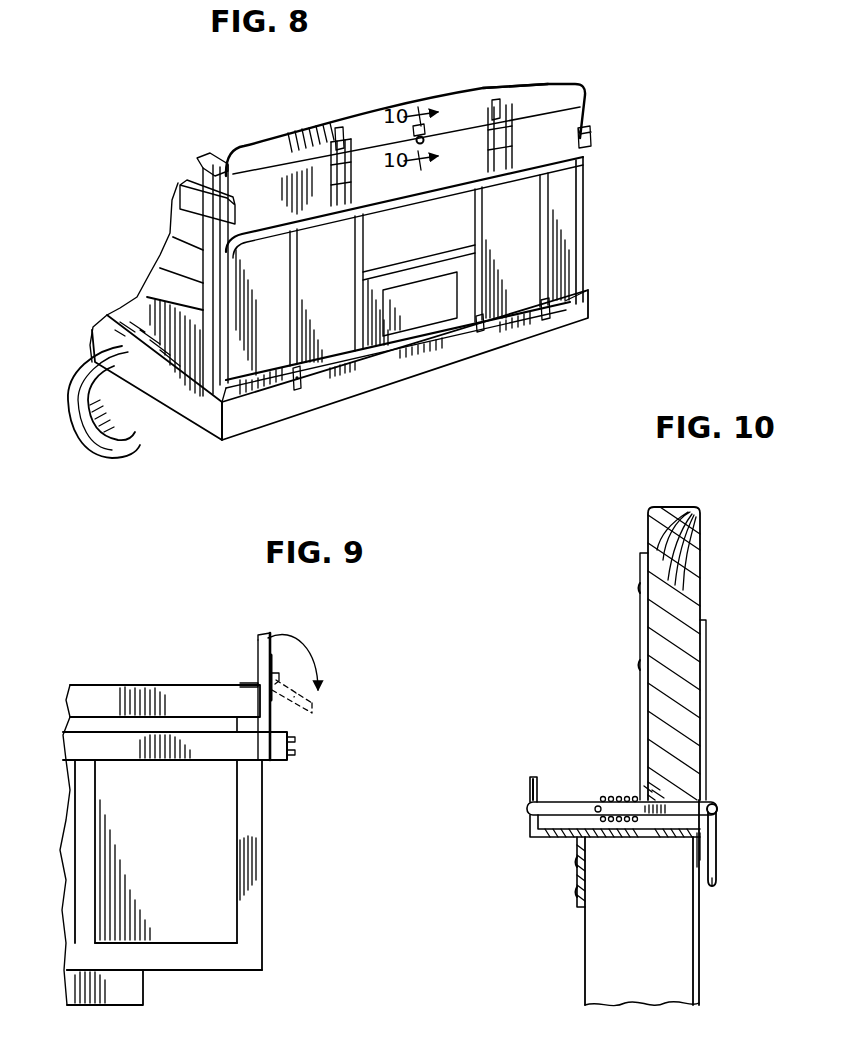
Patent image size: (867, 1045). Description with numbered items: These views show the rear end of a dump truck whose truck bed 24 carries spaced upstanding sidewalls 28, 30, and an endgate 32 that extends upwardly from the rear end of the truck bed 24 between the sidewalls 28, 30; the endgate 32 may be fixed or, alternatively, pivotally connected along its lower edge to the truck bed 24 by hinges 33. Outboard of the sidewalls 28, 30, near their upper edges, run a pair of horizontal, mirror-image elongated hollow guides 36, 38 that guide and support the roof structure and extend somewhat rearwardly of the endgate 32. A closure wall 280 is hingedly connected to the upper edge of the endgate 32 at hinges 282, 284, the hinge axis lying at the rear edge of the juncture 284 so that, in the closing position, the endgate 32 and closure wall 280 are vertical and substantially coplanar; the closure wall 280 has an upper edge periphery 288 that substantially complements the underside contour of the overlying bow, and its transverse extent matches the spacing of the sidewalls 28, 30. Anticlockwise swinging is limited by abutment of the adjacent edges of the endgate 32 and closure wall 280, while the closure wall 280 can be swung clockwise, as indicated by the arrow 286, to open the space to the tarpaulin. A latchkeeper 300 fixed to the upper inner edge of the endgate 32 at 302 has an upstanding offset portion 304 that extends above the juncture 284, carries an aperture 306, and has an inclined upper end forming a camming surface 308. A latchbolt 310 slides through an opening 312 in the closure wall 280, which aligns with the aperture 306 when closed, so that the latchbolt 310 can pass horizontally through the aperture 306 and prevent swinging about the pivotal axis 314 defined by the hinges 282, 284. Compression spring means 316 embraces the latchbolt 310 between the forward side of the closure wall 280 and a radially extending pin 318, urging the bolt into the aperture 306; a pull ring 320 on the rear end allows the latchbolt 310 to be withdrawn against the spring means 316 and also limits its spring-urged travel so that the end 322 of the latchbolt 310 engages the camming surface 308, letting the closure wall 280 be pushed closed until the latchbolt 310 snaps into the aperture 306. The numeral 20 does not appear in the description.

In FIG. 8, the hook coupling 20 is at (105, 432).
In FIG. 8, the truck bed 24 is at (265, 411).
In FIG. 8, the sidewall 28 is at (160, 327).
In FIG. 9, the sidewall 28 is at (200, 933).
In FIG. 8, the sidewall 30 is at (578, 218).
In FIG. 8, the endgate 32 is at (520, 265).
In FIG. 10, the endgate 32 is at (680, 917).
In FIG. 8, the hinges 33 is at (548, 310).
In FIG. 8, the elongated hollow guide 36 is at (194, 193).
In FIG. 9, the elongated hollow guide 36 is at (280, 760).
In FIG. 8, the elongated hollow guide 38 is at (592, 133).
In FIG. 8, the closure wall 280 is at (477, 100).
In FIG. 9, the closure wall 280 is at (258, 677).
In FIG. 10, the closure wall 280 is at (693, 597).
In FIG. 8, the hinge 282 is at (292, 132).
In FIG. 8, the hinge juncture 284 is at (345, 127).
In FIG. 9, the hinge juncture 284 is at (272, 687).
In FIG. 10, the hinge juncture 284 is at (677, 840).
In FIG. 9, the arrow 286 is at (326, 665).
In FIG. 8, the upper edge periphery 288 is at (533, 91).
In FIG. 10, the latchkeeper 300 is at (560, 840).
In FIG. 10, the latchkeeper fixing location 302 is at (578, 893).
In FIG. 10, the upstanding offset portion 304 is at (545, 833).
In FIG. 10, the aperture 306 is at (528, 796).
In FIG. 10, the camming surface 308 is at (533, 780).
In FIG. 10, the latchbolt 310 is at (560, 804).
In FIG. 10, the opening 312 is at (683, 798).
In FIG. 10, the pivotal axis 314 is at (716, 822).
In FIG. 10, the compression spring means 316 is at (632, 798).
In FIG. 10, the radially extending pin 318 is at (600, 797).
In FIG. 10, the pull ring 320 is at (716, 870).
In FIG. 10, the latchbolt end 322 is at (530, 808).